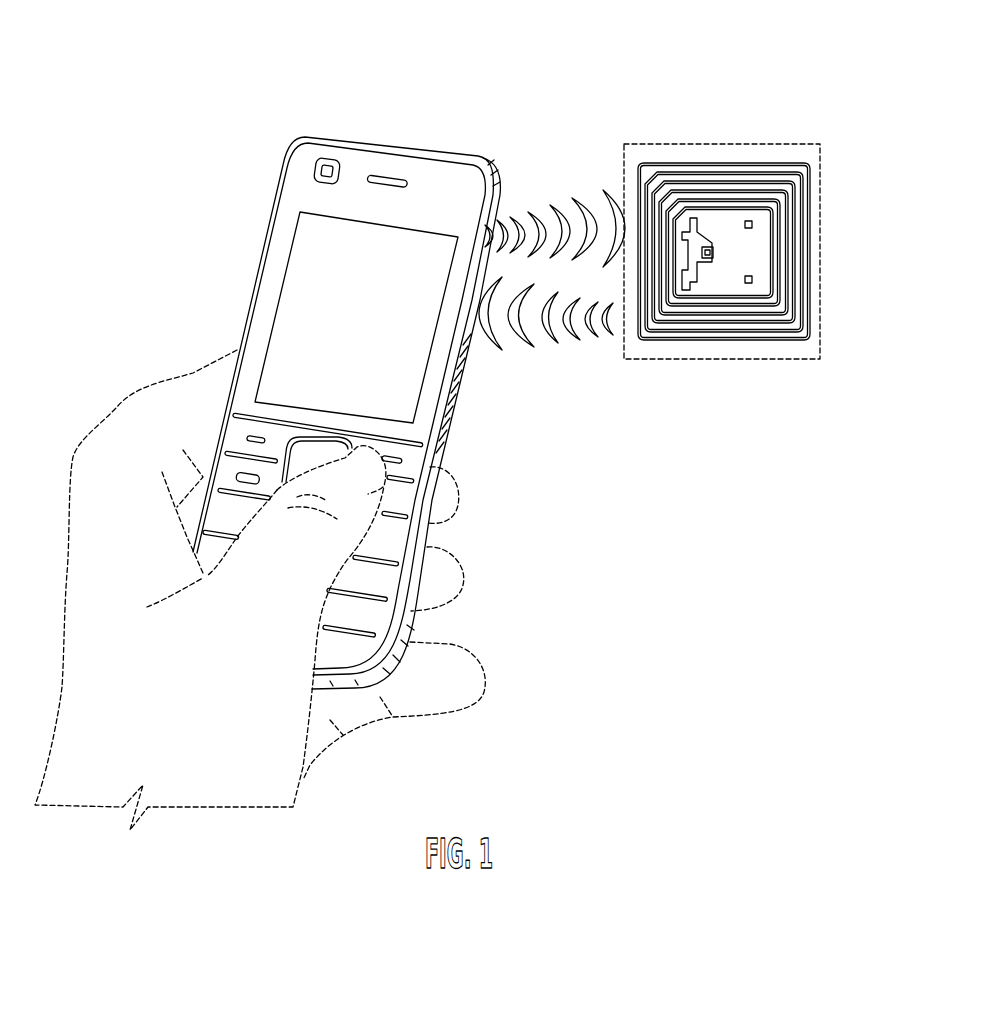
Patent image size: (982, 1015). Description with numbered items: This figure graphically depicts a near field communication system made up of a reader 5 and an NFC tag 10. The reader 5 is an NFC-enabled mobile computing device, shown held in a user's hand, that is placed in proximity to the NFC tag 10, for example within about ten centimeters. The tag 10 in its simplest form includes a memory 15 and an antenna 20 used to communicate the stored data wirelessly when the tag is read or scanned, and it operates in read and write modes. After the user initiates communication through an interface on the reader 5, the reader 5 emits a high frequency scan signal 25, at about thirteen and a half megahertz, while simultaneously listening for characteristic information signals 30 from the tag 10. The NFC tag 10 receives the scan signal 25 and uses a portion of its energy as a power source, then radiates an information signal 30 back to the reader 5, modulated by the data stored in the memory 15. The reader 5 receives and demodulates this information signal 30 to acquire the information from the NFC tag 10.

The reader 5 is at (272, 190).
The NFC tag 10 is at (730, 143).
The memory 15 is at (716, 253).
The antenna 20 is at (811, 274).
The scan signal 25 is at (567, 193).
The information signal 30 is at (568, 350).